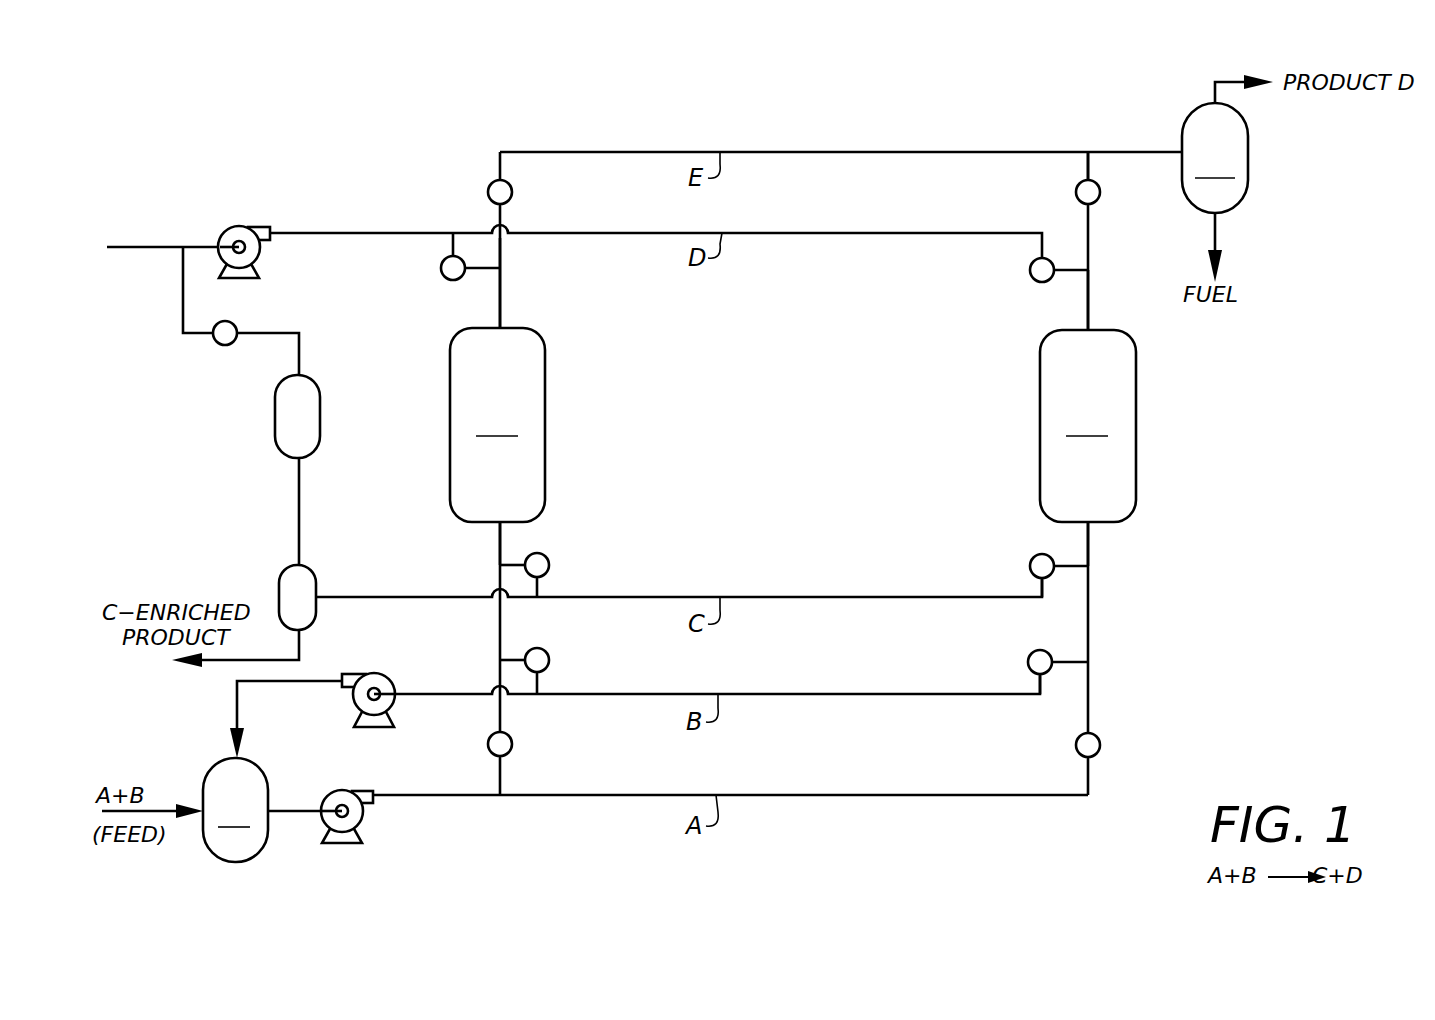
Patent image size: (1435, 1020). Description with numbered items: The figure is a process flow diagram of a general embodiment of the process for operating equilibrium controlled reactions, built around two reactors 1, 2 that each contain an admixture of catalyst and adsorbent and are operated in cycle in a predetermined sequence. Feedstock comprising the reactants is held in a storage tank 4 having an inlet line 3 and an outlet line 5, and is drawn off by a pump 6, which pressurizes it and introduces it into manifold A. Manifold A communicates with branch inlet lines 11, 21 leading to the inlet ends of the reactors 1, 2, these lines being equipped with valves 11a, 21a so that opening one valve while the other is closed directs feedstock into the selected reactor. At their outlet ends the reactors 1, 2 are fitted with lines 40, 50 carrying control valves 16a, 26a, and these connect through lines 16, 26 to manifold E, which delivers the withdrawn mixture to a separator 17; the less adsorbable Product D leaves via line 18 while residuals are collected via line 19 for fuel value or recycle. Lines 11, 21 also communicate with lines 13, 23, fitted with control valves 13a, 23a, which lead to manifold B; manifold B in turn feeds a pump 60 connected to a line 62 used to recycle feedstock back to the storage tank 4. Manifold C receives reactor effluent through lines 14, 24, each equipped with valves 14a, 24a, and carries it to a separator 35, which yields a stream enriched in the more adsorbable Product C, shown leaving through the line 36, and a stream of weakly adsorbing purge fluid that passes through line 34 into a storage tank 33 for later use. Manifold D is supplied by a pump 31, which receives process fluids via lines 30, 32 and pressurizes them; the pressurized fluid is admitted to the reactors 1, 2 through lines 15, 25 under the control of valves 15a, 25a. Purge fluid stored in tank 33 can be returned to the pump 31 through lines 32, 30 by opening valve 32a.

The reactor 1 is at (497, 425).
The reactor 2 is at (1088, 426).
The inlet line 3 is at (162, 806).
The storage tank 4 is at (235, 810).
The outlet line 5 is at (290, 814).
The pump 6 is at (362, 816).
The branch inlet line 11 is at (498, 548).
The valve 11a is at (512, 744).
The line 13 is at (508, 660).
The control valve 13a is at (549, 660).
The line 14 is at (510, 565).
The valve 14a is at (549, 565).
The line 15 is at (486, 272).
The valve 15a is at (441, 268).
The line 16 is at (500, 162).
The control valve 16a is at (488, 192).
The separator 17 is at (1215, 158).
The line 18 is at (1212, 82).
The line 19 is at (1215, 240).
The branch inlet line 21 is at (1088, 546).
The valve 21a is at (1100, 745).
The line 23 is at (1076, 666).
The control valve 23a is at (1028, 664).
The line 24 is at (1074, 572).
The valve 24a is at (1030, 566).
The line 25 is at (1030, 270).
The valve 25a is at (1072, 274).
The line 26 is at (1088, 178).
The control valve 26a is at (1100, 192).
The line 30 is at (183, 246).
The pump 31 is at (240, 226).
The line 32 is at (183, 280).
The valve 32a is at (226, 345).
The storage tank 33 is at (276, 424).
The line 34 is at (299, 518).
The separator 35 is at (282, 578).
The C-enriched product outlet line 36 is at (222, 662).
The line 40 is at (500, 306).
The line 50 is at (1088, 306).
The pump 60 is at (380, 674).
The line 62 is at (284, 682).